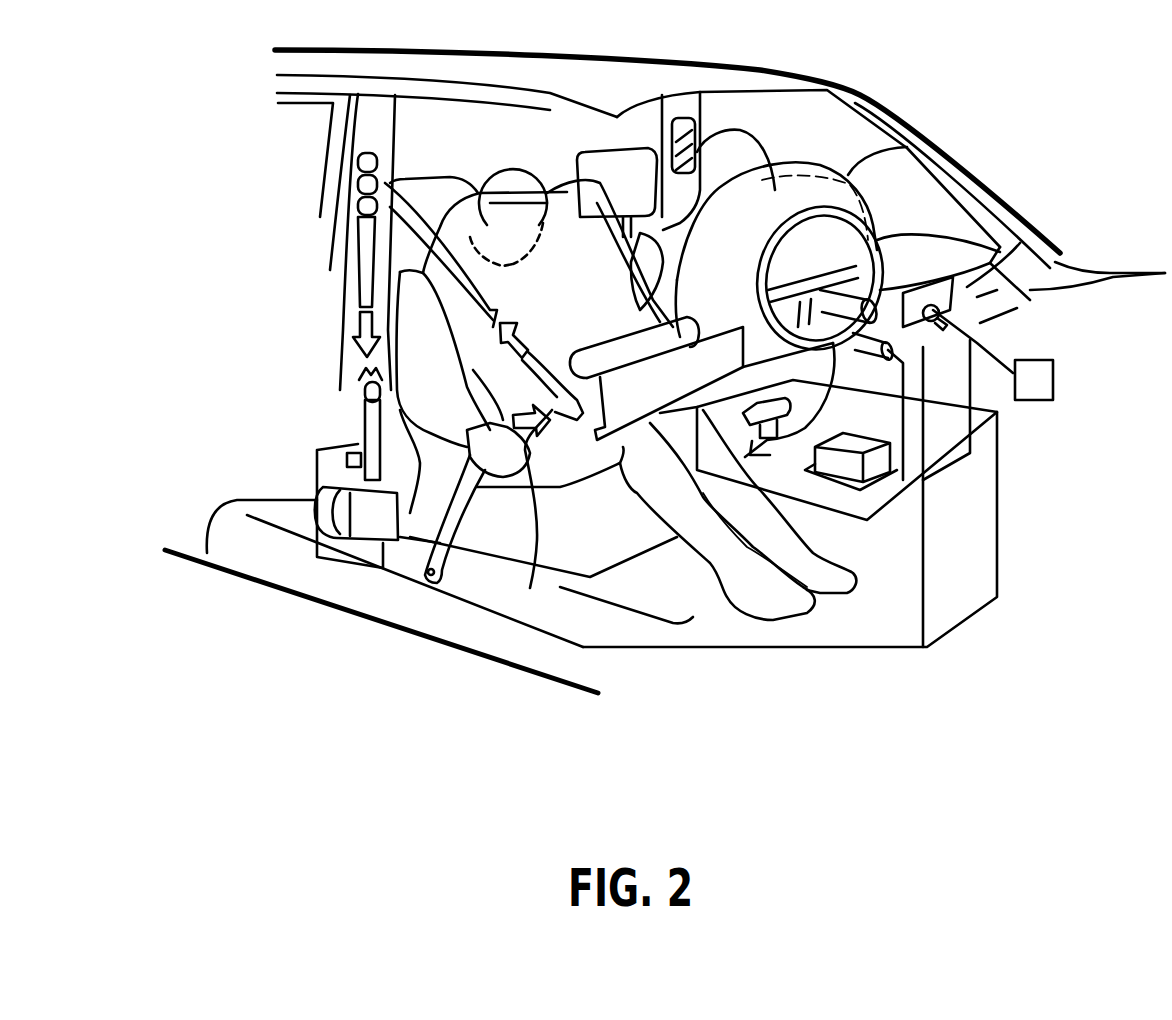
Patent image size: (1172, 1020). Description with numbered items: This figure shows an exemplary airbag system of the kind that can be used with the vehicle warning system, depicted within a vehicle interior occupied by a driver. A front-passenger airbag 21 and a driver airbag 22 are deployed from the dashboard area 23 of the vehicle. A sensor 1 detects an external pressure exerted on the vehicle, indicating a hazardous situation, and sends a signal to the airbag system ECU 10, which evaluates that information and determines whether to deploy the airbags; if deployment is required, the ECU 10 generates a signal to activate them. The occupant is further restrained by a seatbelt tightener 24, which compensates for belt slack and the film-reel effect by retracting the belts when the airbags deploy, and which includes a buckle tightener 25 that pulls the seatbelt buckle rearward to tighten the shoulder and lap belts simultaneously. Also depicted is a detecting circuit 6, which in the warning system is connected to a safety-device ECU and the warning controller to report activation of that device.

The sensor 1 is at (883, 490).
The detecting circuit 6 is at (1053, 380).
The airbag system ECU 10 is at (1020, 260).
The front-passenger airbag 21 is at (450, 177).
The driver airbag 22 is at (907, 147).
The dashboard area 23 is at (1030, 300).
The seatbelt tightener 24 is at (340, 495).
The buckle tightener 25 is at (530, 588).